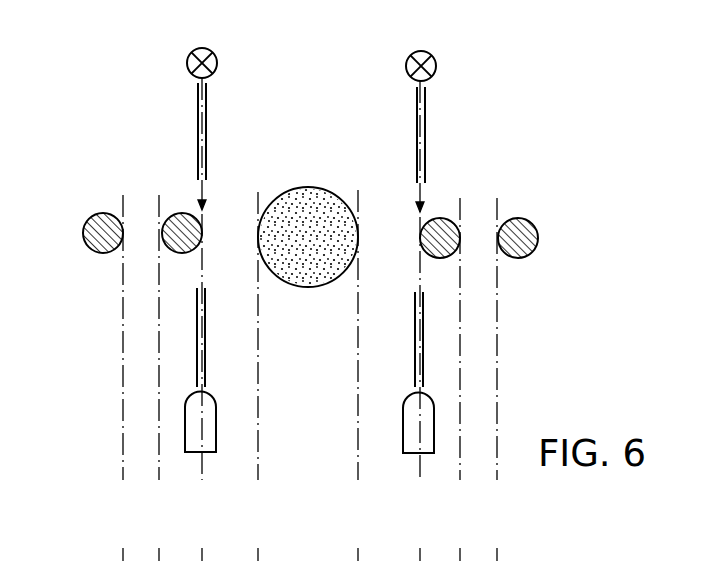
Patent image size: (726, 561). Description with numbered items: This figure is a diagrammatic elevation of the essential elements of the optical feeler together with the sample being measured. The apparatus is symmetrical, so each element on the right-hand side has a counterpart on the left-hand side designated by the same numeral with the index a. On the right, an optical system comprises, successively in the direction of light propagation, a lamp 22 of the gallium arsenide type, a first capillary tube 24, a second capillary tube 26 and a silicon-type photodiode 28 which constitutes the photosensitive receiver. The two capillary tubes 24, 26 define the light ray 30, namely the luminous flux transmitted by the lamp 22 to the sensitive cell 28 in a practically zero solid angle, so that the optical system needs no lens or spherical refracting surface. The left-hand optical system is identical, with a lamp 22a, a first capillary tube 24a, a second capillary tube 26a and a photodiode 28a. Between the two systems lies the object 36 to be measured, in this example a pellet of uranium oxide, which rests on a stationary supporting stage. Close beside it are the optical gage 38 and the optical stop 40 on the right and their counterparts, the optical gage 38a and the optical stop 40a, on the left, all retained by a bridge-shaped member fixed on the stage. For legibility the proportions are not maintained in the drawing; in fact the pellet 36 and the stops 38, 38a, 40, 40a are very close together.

The lamp 22 is at (436, 62).
The lamp 22a is at (190, 52).
The first capillary tube 24 is at (425, 130).
The first capillary tube 24a is at (198, 106).
The second capillary tube 26 is at (424, 333).
The second capillary tube 26a is at (197, 328).
The photodiode 28 is at (428, 411).
The photodiode 28a is at (192, 411).
The light ray 30 is at (415, 267).
The object 36 is at (308, 188).
The optical gage 38 is at (455, 224).
The optical gage 38a is at (170, 220).
The optical stop 40 is at (536, 225).
The optical stop 40a is at (88, 220).